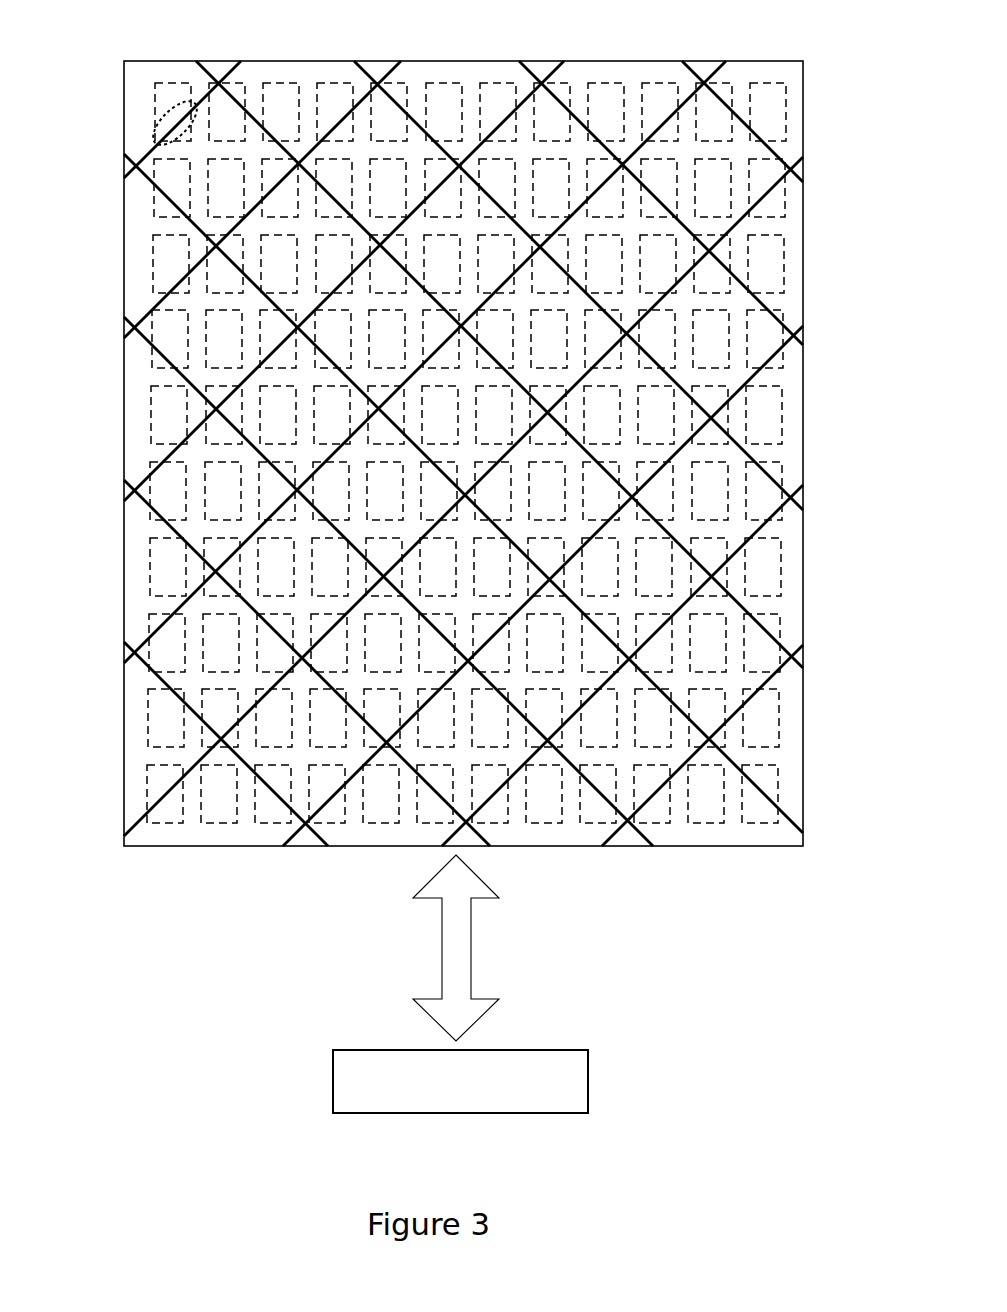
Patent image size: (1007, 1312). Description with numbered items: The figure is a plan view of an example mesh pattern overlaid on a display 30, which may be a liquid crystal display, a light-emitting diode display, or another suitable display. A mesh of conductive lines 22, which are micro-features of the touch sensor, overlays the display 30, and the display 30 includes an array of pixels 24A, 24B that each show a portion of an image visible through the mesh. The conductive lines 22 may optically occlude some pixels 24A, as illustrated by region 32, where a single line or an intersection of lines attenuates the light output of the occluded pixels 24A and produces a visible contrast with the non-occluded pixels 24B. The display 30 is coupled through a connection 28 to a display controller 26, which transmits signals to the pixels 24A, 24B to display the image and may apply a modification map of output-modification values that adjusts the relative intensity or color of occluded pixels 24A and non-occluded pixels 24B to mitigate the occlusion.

The display 30 is at (353, 53).
The conductive lines 22 is at (763, 294).
The occluded pixels 24A is at (172, 98).
The non-occluded pixels 24B is at (209, 337).
The region 32 is at (167, 151).
The connection 28 is at (437, 963).
The display controller 26 is at (327, 1085).